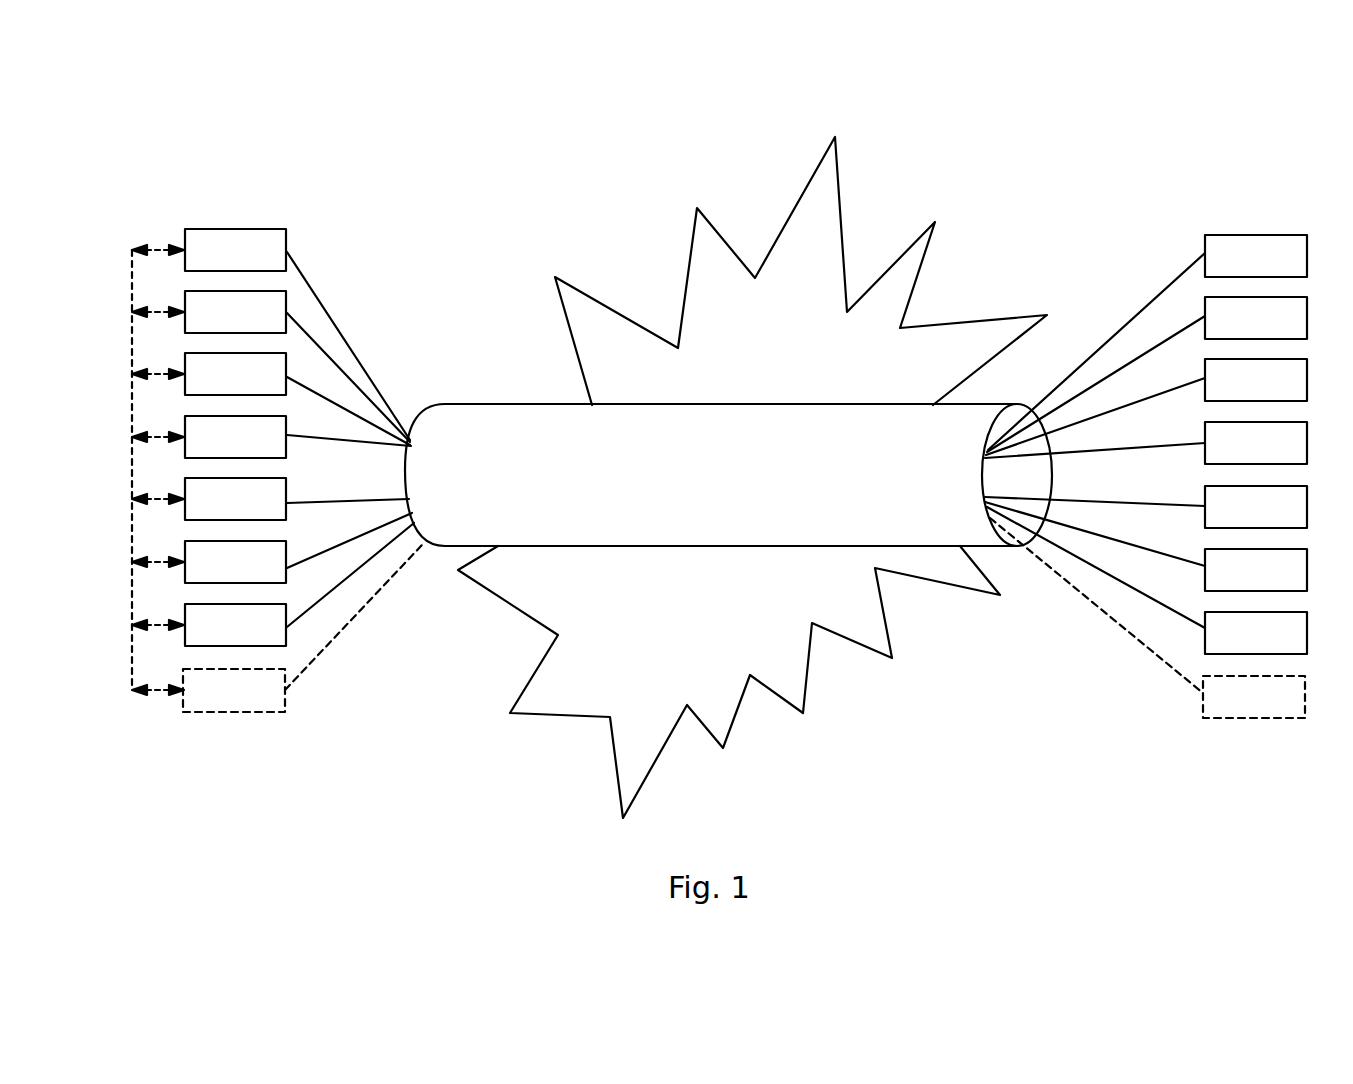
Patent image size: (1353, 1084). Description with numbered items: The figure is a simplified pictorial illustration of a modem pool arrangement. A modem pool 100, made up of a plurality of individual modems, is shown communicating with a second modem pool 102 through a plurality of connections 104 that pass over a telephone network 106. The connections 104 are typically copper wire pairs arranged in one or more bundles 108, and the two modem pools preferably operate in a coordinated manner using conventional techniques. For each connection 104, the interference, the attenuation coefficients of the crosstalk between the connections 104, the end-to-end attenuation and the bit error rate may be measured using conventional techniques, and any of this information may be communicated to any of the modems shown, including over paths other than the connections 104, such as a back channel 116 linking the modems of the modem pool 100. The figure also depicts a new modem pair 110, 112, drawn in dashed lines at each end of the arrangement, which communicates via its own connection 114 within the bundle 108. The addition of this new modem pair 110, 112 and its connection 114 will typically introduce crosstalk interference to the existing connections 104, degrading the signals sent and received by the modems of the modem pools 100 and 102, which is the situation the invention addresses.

The modem pool 100 is at (180, 178).
The modem pool 102 is at (1223, 183).
The connections 104 is at (348, 317).
The telephone network 106 is at (700, 255).
The bundle 108 is at (748, 489).
The new modem 110 is at (213, 688).
The new modem 112 is at (1237, 693).
The connection 114 is at (363, 604).
The back channel 116 is at (132, 655).